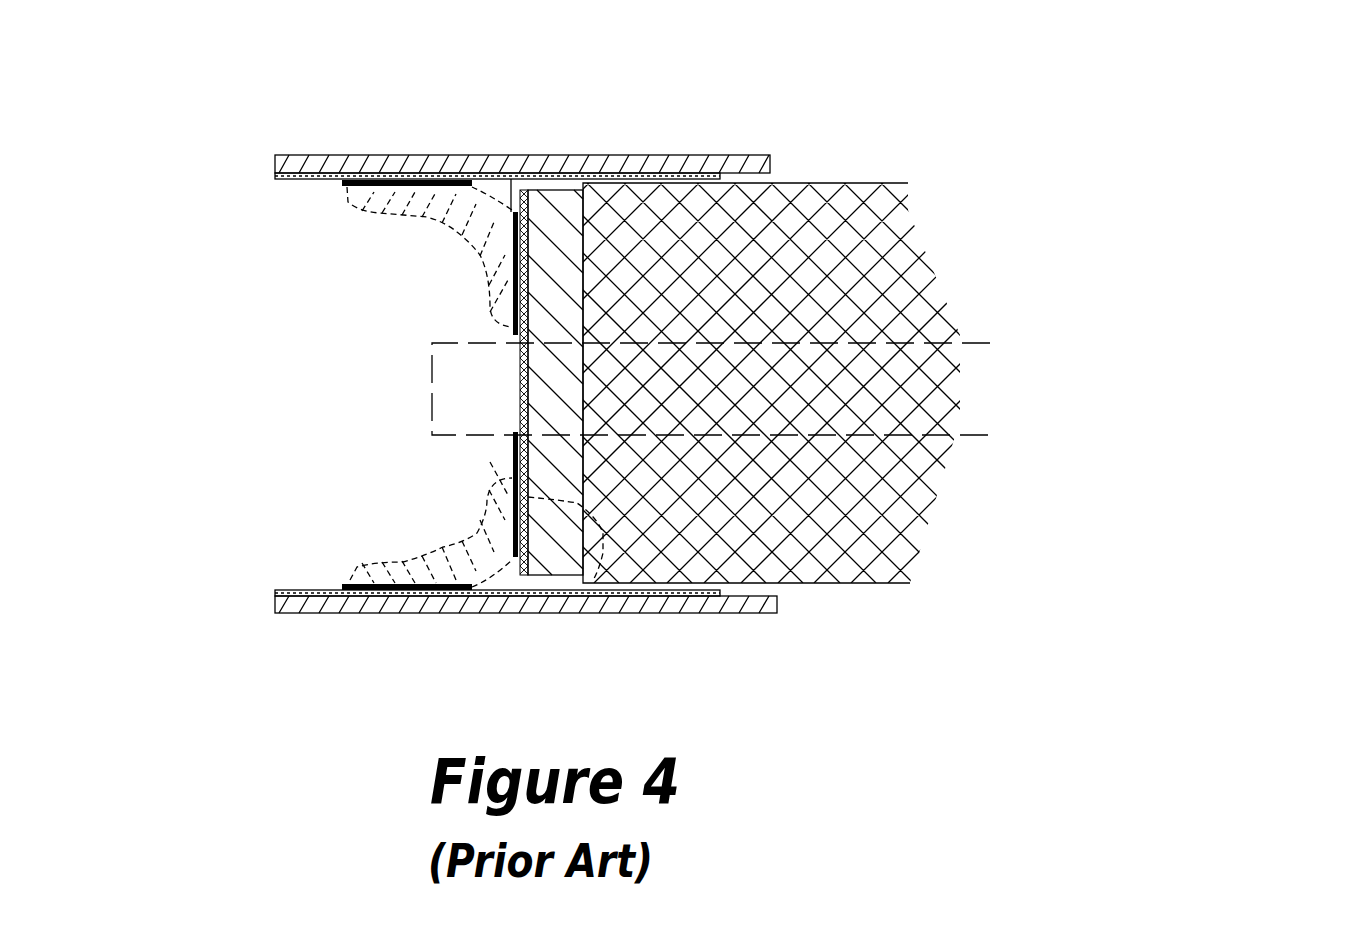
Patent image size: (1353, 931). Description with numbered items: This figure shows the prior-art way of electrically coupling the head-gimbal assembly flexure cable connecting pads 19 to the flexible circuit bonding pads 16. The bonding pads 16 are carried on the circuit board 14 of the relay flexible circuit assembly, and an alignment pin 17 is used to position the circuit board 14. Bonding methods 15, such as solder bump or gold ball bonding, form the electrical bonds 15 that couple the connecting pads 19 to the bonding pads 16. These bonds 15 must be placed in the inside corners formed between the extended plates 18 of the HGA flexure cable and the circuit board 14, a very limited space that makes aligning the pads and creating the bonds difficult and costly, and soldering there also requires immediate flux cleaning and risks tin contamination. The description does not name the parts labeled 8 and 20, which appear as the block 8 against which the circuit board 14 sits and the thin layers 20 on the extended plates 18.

The heat sink / thermal block 8 is at (830, 520).
The thermal interface layer 14 is at (567, 360).
The solder fillets 15 is at (398, 567).
The metallization layer 16 is at (523, 470).
The semiconductor device 17 is at (868, 380).
The circuit boards 18 is at (505, 605).
The solder pads 19 is at (345, 583).
The conductive layers 20 is at (290, 592).